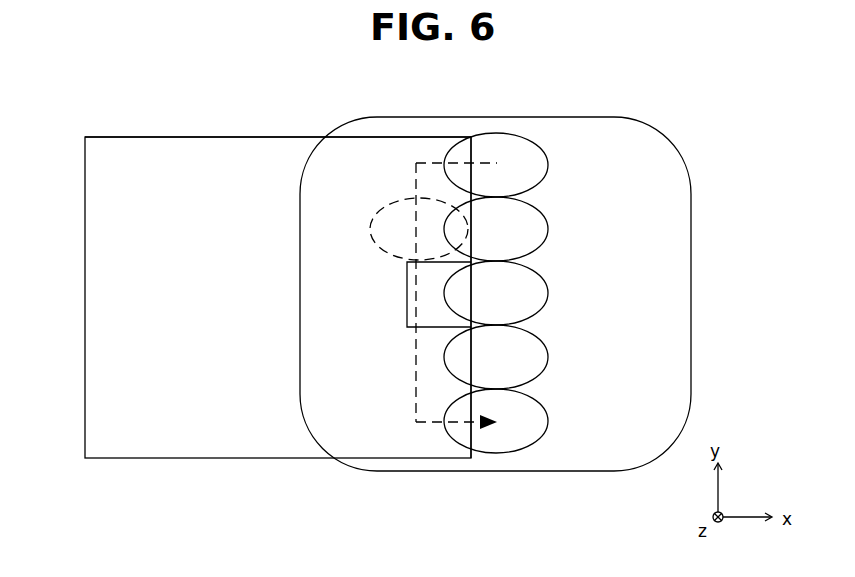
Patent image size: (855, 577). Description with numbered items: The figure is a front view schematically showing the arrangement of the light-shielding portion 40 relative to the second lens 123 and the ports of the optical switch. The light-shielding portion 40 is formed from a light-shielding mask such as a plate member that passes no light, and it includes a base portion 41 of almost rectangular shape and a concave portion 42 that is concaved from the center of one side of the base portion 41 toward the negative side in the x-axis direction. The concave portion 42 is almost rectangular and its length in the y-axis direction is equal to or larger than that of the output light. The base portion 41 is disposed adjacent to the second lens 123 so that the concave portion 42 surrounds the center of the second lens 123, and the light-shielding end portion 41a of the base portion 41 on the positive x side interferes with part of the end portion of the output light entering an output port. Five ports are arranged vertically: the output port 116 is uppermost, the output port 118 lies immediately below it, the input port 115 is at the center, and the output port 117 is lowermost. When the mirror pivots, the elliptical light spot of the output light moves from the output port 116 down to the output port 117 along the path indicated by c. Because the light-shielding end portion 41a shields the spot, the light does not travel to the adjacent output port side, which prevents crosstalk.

The light-shielding portion 40 is at (85, 278).
The base portion 41 is at (240, 138).
The light-shielding end portion 41a is at (471, 215).
The concave portion 42 is at (437, 290).
The second lens 123 is at (494, 117).
The input port 115 is at (548, 293).
The output port 116 is at (548, 165).
The output port 117 is at (548, 421).
The output port 118 is at (548, 229).
The moving path of the light spot c is at (415, 405).